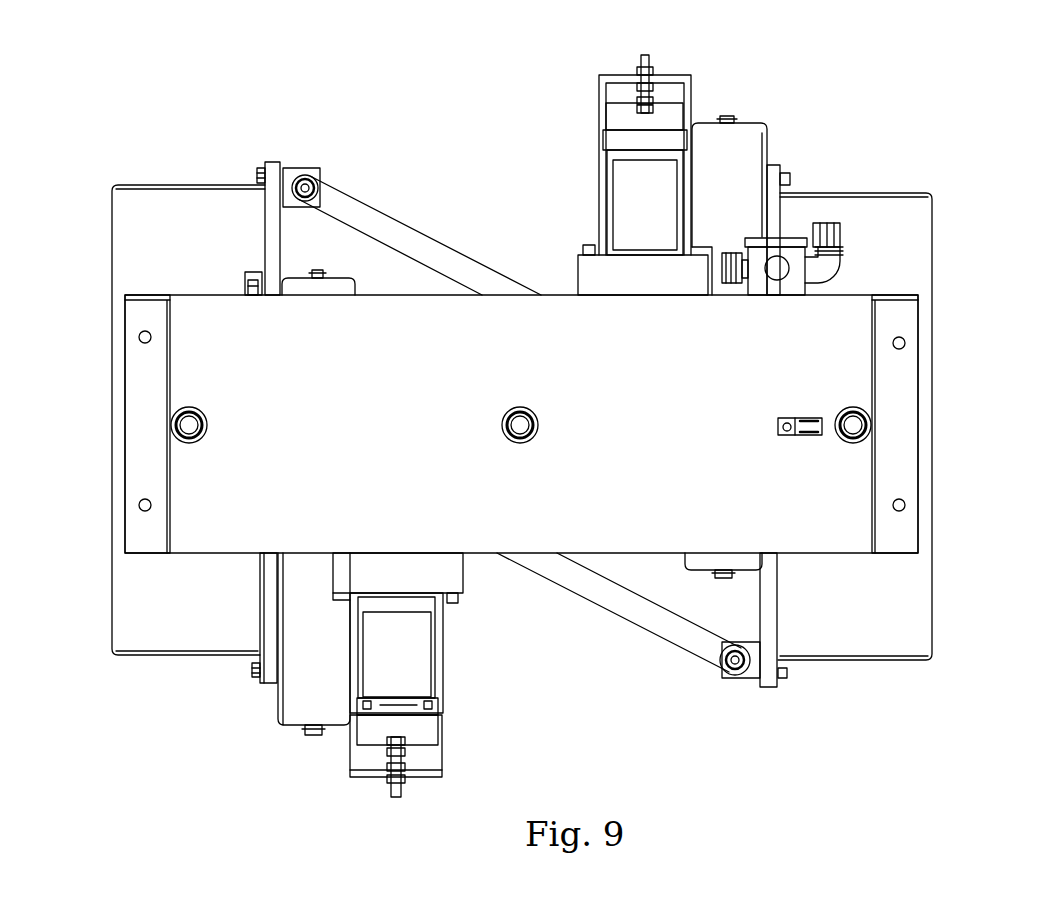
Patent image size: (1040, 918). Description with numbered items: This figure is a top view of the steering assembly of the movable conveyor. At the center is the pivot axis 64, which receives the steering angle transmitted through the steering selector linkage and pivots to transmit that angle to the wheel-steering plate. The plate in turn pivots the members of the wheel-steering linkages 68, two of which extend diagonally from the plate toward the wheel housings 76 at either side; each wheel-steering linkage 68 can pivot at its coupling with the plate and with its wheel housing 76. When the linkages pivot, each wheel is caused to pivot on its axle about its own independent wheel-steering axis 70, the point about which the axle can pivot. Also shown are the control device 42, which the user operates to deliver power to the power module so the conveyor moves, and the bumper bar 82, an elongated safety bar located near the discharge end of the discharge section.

The control device 42 is at (823, 223).
The pivot axis 64 is at (520, 430).
The wheel-steering linkage 68 is at (405, 238).
The wheel-steering axis 70 is at (185, 423).
The wheel housing 76 is at (188, 655).
The bumper bar 82 is at (645, 55).